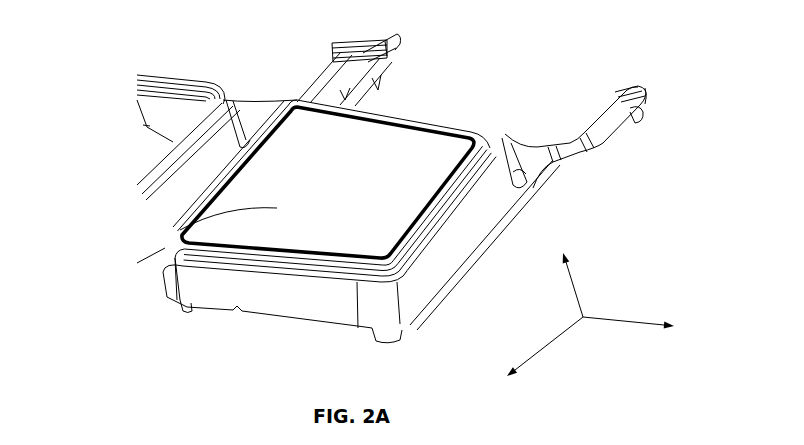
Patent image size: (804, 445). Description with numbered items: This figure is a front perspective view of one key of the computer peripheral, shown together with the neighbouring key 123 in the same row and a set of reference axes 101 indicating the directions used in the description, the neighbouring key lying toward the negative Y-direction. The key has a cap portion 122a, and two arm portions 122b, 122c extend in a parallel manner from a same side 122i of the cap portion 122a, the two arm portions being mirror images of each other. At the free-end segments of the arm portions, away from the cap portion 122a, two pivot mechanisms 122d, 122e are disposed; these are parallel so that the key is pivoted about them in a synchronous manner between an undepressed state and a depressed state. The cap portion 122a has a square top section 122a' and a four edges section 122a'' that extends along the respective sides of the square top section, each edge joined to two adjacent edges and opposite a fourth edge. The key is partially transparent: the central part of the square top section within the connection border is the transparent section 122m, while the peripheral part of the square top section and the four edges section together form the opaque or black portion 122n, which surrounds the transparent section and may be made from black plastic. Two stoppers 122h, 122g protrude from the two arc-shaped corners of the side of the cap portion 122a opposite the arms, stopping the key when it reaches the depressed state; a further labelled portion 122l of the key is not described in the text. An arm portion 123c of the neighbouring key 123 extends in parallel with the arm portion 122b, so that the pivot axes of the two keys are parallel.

The coordinate system 101 is at (601, 360).
The key 123 is at (183, 103).
The arm portion 123c is at (323, 73).
The cap portion 122a is at (505, 138).
The square top section 122a' is at (263, 182).
The four edges section 122a'' is at (340, 236).
The arm portion 122b is at (327, 73).
The arm portion 122c is at (588, 152).
The pivot mechanism 122d is at (385, 52).
The pivot mechanism 122e is at (623, 86).
The stopper 122g is at (187, 312).
The stopper 122h is at (400, 331).
The side of the cap portion 122i is at (440, 107).
The left side wall 122l is at (173, 268).
The transparent section 122m is at (294, 223).
The opaque or black portion 122n is at (500, 207).